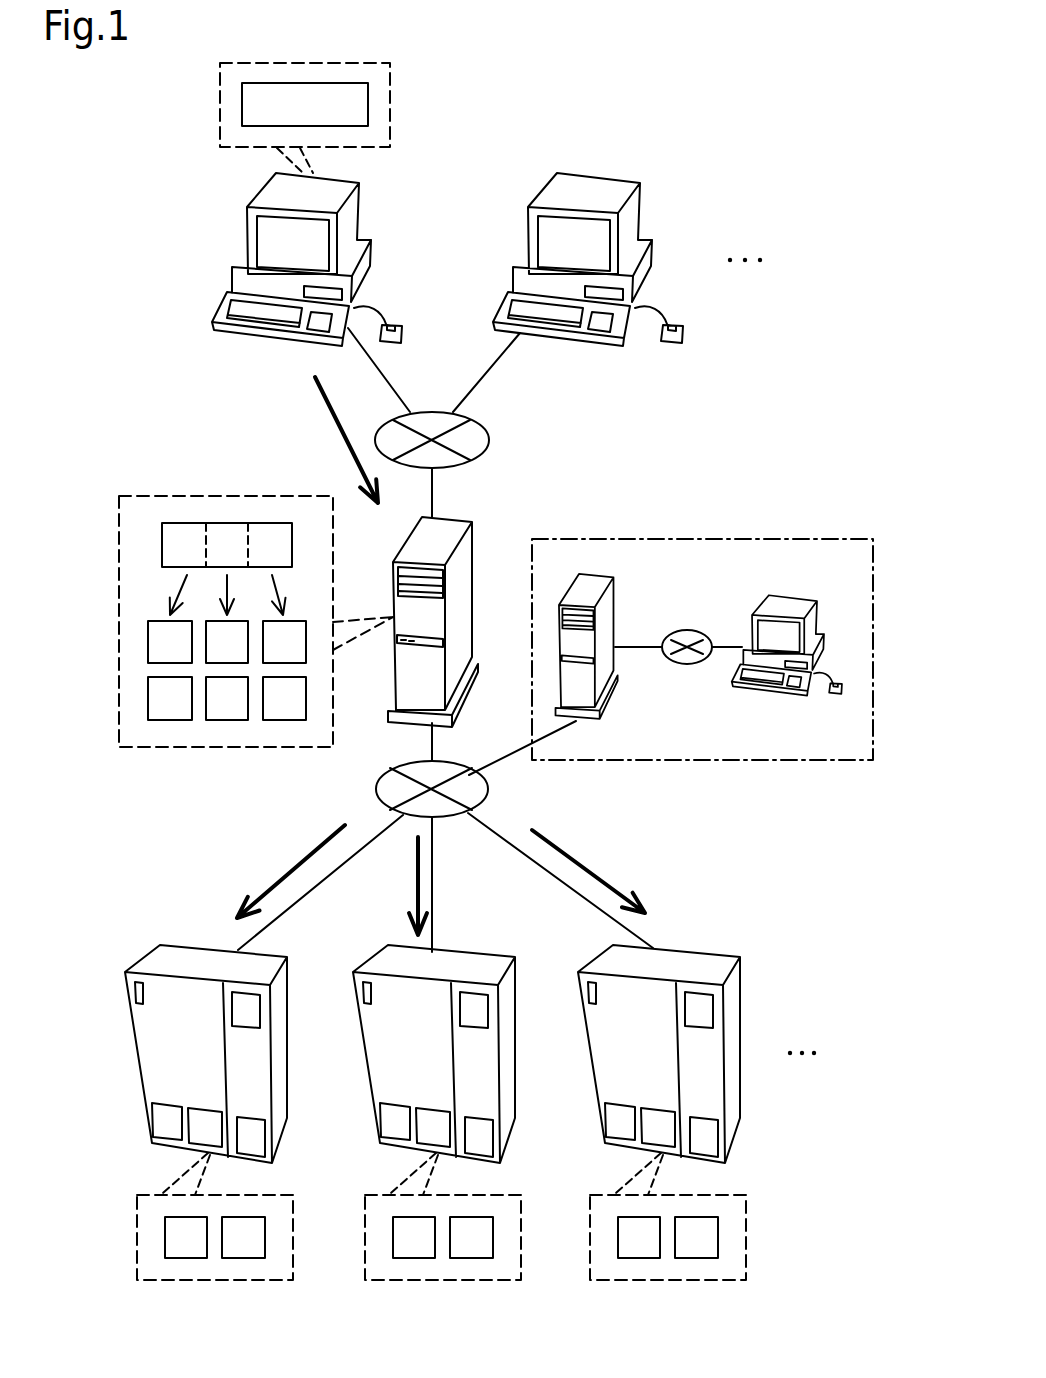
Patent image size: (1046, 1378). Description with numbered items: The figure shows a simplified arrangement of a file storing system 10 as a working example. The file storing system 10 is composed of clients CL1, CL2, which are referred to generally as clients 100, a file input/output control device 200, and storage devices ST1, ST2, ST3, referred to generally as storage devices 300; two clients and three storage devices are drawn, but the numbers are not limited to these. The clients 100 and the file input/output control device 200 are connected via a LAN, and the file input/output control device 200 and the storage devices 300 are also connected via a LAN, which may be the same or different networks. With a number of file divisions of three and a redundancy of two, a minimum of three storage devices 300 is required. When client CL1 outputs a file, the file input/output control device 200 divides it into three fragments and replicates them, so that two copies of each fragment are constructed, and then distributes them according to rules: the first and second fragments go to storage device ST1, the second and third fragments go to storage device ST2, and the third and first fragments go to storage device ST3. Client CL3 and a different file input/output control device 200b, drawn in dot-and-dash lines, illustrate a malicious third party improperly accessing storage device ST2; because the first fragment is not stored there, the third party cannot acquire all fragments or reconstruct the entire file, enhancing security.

The file storing system 10 is at (802, 63).
The clients 100 is at (493, 259).
The client CL1 is at (359, 197).
The client CL2 is at (640, 197).
The client CL3 is at (793, 598).
The element LAN is at (489, 437).
The file input/output control device 200 is at (473, 543).
The file input/output control device 200b is at (600, 577).
The storage devices 300 is at (438, 1092).
The storage device ST1 is at (140, 956).
The storage device ST2 is at (473, 952).
The storage device ST3 is at (700, 953).